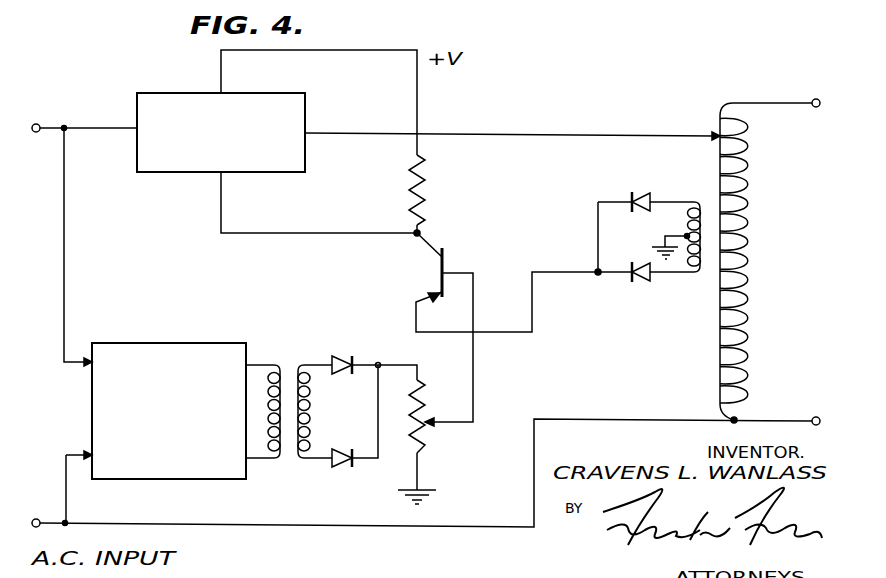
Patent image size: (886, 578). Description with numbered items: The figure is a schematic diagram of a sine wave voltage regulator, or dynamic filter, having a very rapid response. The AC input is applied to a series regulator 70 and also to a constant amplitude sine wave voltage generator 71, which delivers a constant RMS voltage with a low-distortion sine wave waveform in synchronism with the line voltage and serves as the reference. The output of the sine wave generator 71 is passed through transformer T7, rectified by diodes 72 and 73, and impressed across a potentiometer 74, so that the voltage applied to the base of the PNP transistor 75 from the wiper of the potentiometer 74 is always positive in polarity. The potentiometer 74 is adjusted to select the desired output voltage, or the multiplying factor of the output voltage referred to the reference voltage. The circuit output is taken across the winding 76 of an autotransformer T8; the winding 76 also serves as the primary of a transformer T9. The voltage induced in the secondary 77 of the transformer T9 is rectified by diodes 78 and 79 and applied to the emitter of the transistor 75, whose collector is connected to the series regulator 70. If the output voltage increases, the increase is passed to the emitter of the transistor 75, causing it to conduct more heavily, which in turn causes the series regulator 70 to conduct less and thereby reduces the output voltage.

The series regulator 70 is at (184, 93).
The constant amplitude sine wave voltage generator 71 is at (172, 343).
The diode 72 is at (338, 355).
The diode 73 is at (345, 470).
The potentiometer 74 is at (427, 437).
The PNP transistor 75 is at (445, 262).
The winding 76 is at (748, 158).
The secondary 77 is at (705, 178).
The diode 78 is at (640, 192).
The diode 79 is at (643, 282).
The transformer T7 is at (288, 366).
The autotransformer T8 is at (760, 242).
The transformer T9 is at (708, 275).